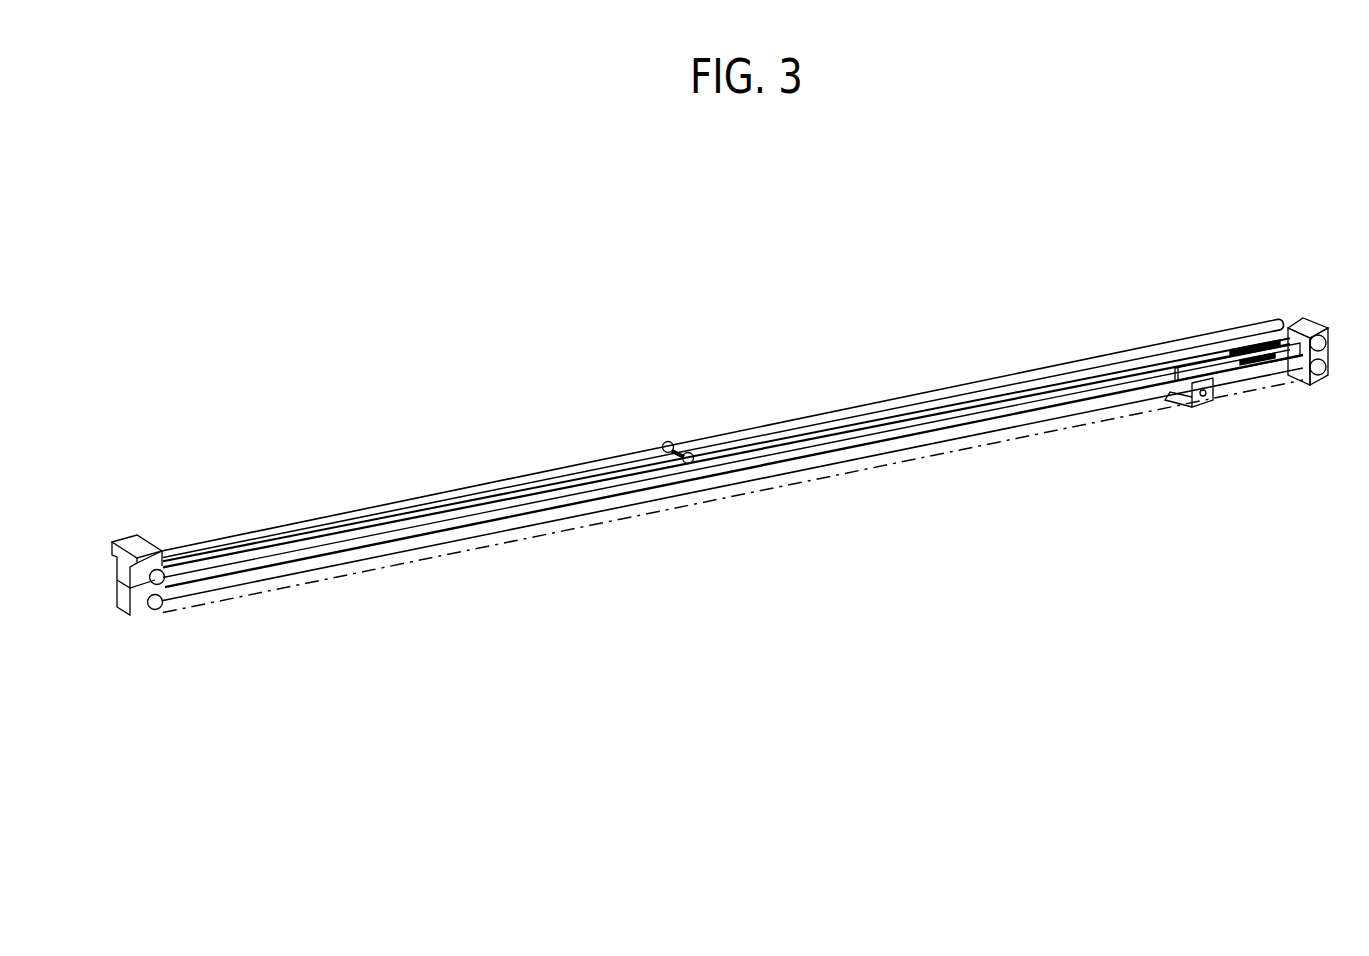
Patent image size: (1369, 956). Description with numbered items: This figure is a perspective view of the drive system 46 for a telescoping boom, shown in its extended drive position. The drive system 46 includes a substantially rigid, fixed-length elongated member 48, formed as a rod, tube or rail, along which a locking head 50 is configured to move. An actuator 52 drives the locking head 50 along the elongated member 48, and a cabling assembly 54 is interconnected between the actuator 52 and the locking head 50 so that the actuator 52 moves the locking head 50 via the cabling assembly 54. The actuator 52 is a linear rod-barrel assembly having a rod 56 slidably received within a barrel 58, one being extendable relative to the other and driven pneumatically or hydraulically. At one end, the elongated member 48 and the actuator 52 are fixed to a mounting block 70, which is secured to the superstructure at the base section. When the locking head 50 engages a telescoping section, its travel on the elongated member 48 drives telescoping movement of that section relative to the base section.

The drive system 46 is at (835, 238).
The elongated member 48 is at (863, 458).
The locking head 50 is at (1262, 384).
The actuator 52 is at (672, 443).
The cabling assembly 54 is at (195, 610).
The rod 56 is at (228, 550).
The barrel 58 is at (1248, 322).
The mounting block 70 is at (116, 562).